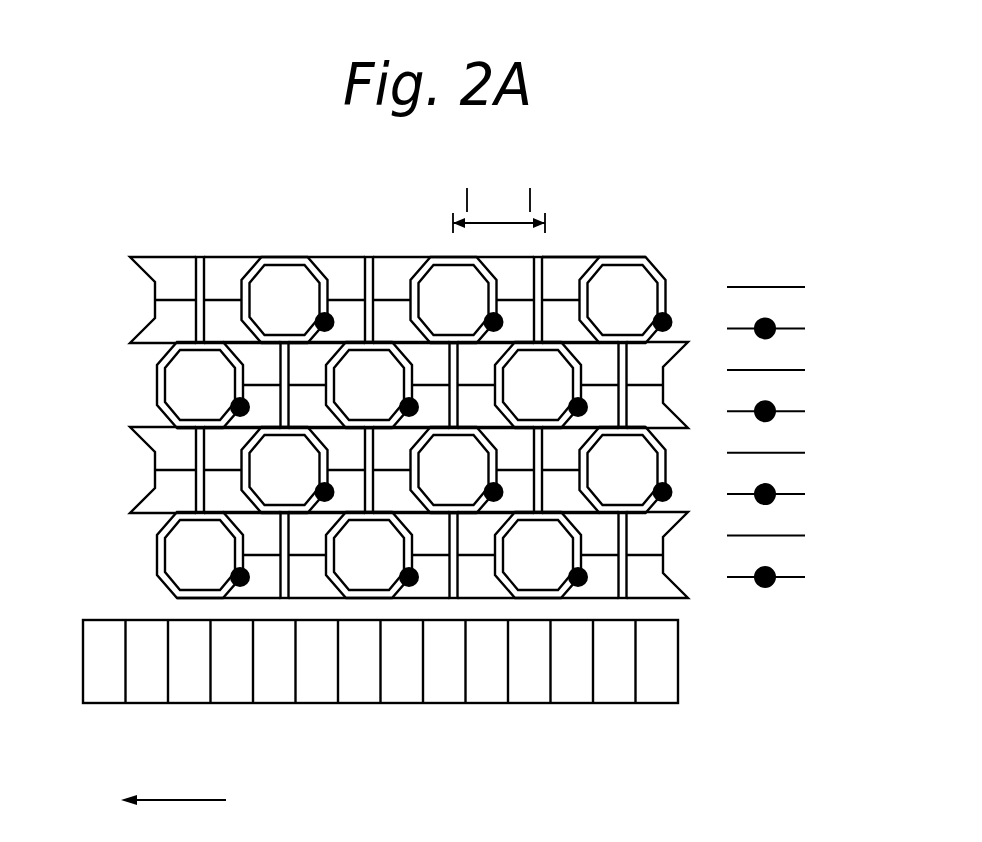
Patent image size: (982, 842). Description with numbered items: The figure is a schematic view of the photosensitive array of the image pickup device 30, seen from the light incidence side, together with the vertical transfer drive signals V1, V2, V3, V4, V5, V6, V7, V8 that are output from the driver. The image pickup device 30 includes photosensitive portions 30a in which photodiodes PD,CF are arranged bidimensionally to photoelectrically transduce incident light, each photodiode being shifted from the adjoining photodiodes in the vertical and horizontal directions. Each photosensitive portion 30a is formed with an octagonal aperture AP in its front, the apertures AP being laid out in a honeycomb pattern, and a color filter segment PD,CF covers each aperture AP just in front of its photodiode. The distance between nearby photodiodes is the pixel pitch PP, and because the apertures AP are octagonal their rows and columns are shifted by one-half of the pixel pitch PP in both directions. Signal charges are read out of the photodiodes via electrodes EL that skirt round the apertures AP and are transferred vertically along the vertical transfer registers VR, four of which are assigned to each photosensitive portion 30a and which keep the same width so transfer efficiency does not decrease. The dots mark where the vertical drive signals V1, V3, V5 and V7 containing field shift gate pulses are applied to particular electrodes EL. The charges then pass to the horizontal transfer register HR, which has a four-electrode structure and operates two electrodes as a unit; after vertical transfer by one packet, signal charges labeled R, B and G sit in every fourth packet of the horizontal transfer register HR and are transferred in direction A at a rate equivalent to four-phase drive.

The image pickup device 30 is at (738, 228).
The photosensitive portion 30a is at (566, 250).
The vertical transfer register VR is at (227, 257).
The electrode EL is at (335, 320).
The photodiode and color filter segment PD,CF is at (618, 270).
The aperture AP is at (316, 278).
The pixel pitch PP is at (499, 224).
The vertical transfer drive signal V1 is at (798, 577).
The vertical transfer drive signal V2 is at (798, 536).
The vertical transfer drive signal V3 is at (798, 494).
The vertical transfer drive signal V4 is at (798, 453).
The vertical transfer drive signal V5 is at (798, 411).
The vertical transfer drive signal V6 is at (798, 370).
The vertical transfer drive signal V7 is at (798, 328).
The vertical transfer drive signal V8 is at (798, 287).
The horizontal transfer register HR is at (678, 673).
The direction A is at (190, 800).